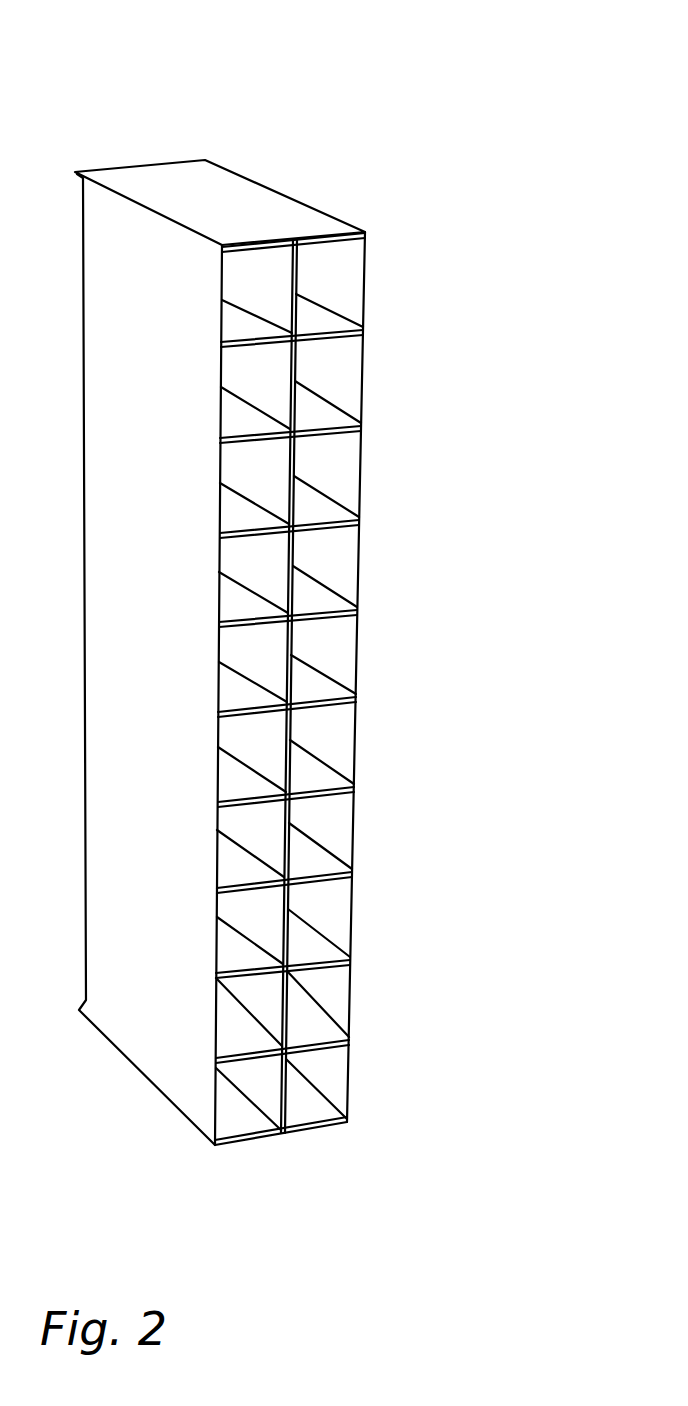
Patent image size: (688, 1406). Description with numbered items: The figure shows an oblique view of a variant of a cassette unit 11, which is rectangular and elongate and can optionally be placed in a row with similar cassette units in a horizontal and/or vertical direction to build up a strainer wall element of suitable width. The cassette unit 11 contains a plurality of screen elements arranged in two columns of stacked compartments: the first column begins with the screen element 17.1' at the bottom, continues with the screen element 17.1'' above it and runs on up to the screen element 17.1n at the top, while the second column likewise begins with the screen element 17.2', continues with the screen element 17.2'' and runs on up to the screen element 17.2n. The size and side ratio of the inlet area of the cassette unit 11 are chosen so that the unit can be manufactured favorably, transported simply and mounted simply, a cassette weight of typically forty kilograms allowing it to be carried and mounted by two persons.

The cassette unit 11 is at (262, 119).
The screen element 17.1n is at (255, 293).
The screen element 17.2n is at (325, 280).
The screen element 17.1'' is at (331, 1038).
The screen element 17.2'' is at (405, 1015).
The screen element 17.1' is at (319, 1130).
The screen element 17.2' is at (396, 1105).